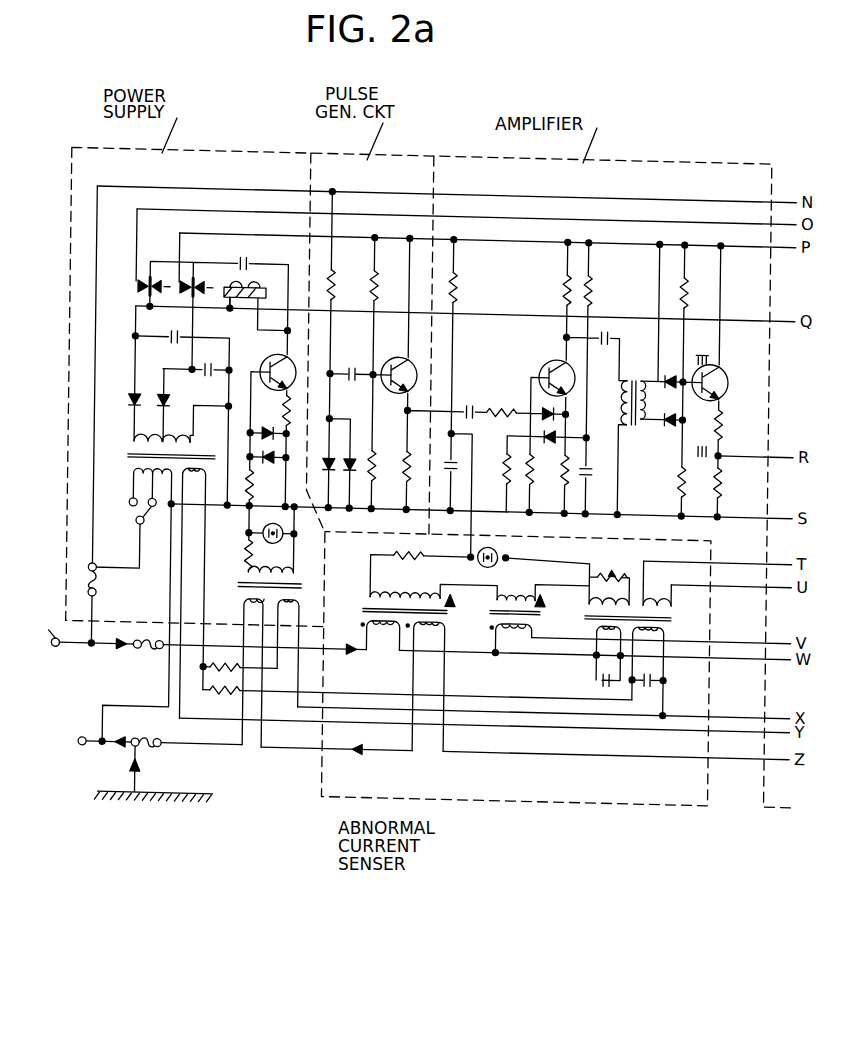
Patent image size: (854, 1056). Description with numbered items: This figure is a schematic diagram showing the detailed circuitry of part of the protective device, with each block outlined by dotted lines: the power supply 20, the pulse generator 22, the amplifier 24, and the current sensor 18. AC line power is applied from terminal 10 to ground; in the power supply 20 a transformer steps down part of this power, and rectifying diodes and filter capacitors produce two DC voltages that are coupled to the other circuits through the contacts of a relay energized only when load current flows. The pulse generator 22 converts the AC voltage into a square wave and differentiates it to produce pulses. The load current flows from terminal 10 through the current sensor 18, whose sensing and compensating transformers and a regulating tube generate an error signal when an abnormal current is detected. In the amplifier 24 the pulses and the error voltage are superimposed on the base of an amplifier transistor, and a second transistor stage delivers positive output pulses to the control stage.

The terminal 10 is at (45, 635).
The current sensor 18 is at (523, 798).
The power supply 20 is at (202, 155).
The pulse generator 22 is at (392, 167).
The amplifier 24 is at (610, 167).